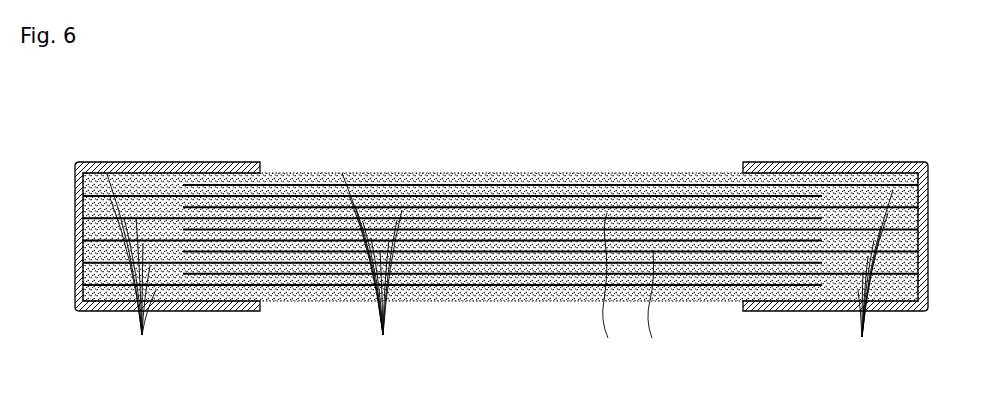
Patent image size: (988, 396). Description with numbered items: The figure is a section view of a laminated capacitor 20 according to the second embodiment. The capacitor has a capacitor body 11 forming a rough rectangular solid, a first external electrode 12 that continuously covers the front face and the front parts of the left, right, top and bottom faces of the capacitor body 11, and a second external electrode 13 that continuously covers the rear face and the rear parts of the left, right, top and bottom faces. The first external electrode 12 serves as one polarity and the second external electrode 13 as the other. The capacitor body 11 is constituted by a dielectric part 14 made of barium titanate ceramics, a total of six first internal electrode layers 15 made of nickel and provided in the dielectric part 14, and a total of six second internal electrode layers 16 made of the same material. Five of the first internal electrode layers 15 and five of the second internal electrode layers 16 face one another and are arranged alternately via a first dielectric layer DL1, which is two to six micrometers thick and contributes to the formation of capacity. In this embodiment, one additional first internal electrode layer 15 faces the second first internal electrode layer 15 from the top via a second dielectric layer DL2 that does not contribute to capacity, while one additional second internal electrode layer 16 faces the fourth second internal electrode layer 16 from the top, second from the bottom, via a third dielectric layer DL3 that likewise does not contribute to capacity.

The capacitor body 11 is at (468, 173).
The first external electrode 12 is at (133, 163).
The second external electrode 13 is at (870, 163).
The dielectric part 14 is at (545, 180).
The laminated capacitor 20 is at (336, 162).
The first internal electrode layer 15 is at (131, 271).
The second internal electrode layer 16 is at (872, 279).
The first dielectric layer DL1 is at (372, 269).
The second dielectric layer DL2 is at (609, 289).
The third dielectric layer DL3 is at (653, 308).